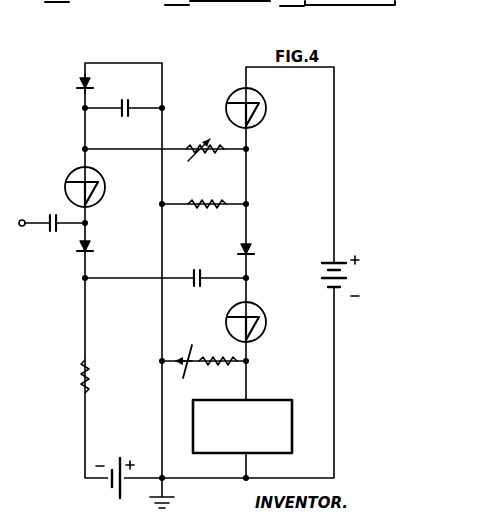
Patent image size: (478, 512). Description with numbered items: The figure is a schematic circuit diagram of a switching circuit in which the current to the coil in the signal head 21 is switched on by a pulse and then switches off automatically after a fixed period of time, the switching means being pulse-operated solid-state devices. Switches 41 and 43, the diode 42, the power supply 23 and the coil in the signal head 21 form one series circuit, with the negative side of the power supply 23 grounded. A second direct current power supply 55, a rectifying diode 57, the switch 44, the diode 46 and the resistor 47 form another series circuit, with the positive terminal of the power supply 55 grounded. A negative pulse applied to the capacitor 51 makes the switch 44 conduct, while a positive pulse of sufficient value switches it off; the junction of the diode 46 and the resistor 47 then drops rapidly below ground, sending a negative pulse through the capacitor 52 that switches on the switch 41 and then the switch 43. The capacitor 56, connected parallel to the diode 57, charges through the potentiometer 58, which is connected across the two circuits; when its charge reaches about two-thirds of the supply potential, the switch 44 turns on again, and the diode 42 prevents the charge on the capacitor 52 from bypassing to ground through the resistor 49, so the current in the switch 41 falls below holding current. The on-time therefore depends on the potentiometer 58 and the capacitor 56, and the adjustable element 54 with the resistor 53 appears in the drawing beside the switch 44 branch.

The signal head 21 is at (258, 400).
The power supply 23 is at (325, 262).
The switch 41 is at (263, 115).
The diode 42 is at (250, 254).
The switch 43 is at (262, 334).
The switch 44 is at (98, 204).
The diode 46 is at (92, 250).
The resistor 47 is at (88, 369).
The resistor 49 is at (190, 208).
The capacitor 51 is at (48, 216).
The capacitor 52 is at (192, 272).
The resistor 53 is at (220, 358).
The variable contact 54 is at (188, 350).
The direct current power supply 55 is at (110, 481).
The capacitor 56 is at (128, 106).
The rectifying diode 57 is at (82, 83).
The potentiometer 58 is at (196, 146).